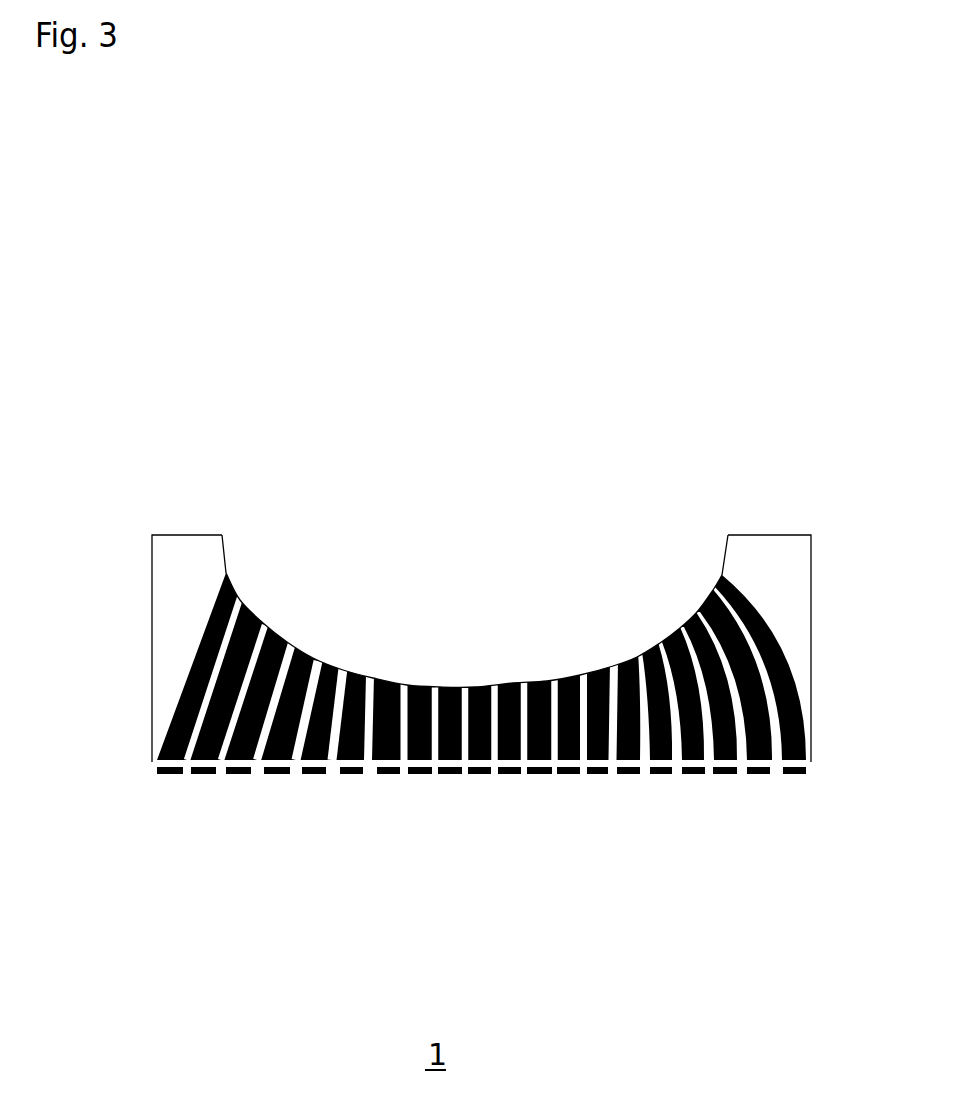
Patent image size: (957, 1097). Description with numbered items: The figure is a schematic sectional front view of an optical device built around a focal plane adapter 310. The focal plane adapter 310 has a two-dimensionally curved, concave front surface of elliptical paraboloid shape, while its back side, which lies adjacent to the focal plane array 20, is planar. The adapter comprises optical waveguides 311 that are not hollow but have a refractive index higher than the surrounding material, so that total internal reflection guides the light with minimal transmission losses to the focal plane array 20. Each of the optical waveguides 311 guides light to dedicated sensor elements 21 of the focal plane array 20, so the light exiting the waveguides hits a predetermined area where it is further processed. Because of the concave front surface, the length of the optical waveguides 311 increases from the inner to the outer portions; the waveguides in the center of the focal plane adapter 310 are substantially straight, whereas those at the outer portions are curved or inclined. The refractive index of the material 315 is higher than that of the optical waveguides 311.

The focal plane adapter 310 is at (205, 455).
The optical waveguides 311 is at (331, 665).
The material 315 is at (227, 569).
The focal plane array 20 is at (668, 790).
The sensor elements 21 is at (202, 775).